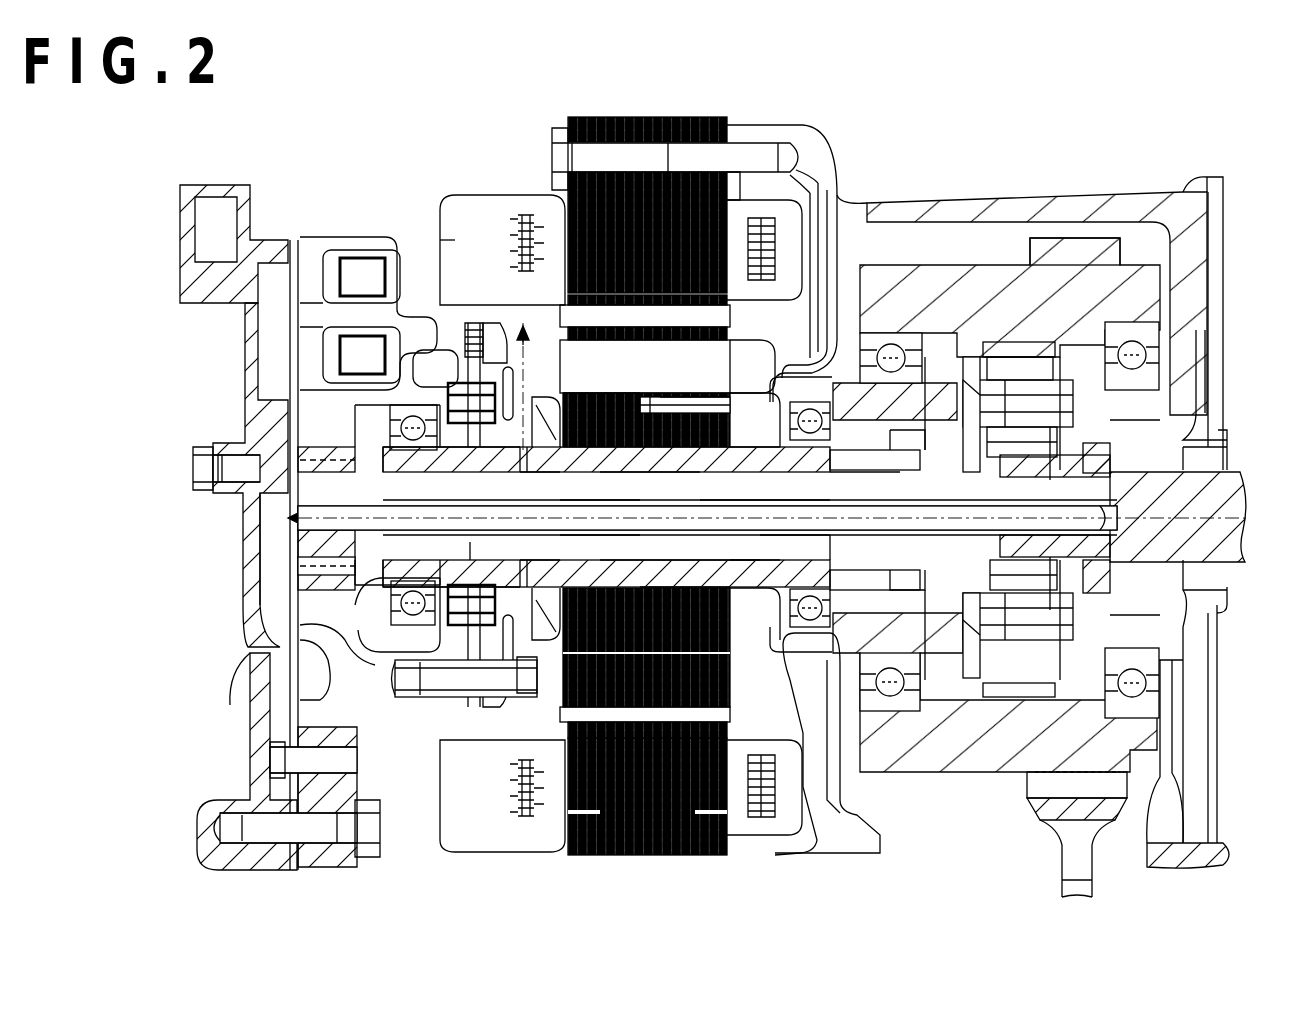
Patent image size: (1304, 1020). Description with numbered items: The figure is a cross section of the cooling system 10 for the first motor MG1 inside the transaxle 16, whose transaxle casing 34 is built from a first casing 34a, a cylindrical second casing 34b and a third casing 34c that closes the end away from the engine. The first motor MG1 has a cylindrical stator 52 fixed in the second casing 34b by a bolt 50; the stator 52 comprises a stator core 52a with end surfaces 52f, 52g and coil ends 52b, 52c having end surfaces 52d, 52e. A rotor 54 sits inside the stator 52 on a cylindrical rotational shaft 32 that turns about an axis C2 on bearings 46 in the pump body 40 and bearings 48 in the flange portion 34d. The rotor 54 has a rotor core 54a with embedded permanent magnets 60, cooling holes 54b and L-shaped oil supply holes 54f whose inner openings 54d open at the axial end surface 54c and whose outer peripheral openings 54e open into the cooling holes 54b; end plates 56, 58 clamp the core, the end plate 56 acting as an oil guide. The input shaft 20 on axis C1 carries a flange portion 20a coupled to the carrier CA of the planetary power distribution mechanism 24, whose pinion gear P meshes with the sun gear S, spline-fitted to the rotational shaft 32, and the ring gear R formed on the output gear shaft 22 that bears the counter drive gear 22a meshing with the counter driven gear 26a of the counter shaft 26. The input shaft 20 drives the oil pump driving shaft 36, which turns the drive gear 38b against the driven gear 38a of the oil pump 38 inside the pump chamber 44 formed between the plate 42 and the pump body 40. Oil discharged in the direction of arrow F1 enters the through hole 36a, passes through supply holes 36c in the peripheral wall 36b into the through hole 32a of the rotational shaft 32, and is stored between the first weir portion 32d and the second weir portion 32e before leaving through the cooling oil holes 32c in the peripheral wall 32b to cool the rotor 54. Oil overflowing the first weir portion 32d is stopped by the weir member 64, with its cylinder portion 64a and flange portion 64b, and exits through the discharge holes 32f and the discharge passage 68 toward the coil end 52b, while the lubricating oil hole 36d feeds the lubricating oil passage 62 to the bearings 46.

The cooling system 10 is at (275, 428).
The transaxle 16 is at (803, 112).
The input shaft 20 is at (1252, 493).
The flange portion 20a is at (1090, 462).
The output gear shaft 22 is at (972, 252).
The counter drive gear 22a is at (1105, 250).
The power distribution mechanism 24 is at (1100, 415).
The counter shaft 26 is at (1052, 848).
The counter driven gear 26a is at (1040, 815).
The rotational shaft 32 is at (707, 481).
The through hole 32a is at (700, 600).
The peripheral wall 32b is at (730, 472).
The cooling oil holes 32c is at (880, 445).
The first weir portion 32d is at (600, 519).
The second weir portion 32e is at (830, 455).
The discharge holes 32f is at (527, 460).
The transaxle casing 34 is at (1118, 190).
The first casing 34a is at (1200, 178).
The second casing 34b is at (766, 128).
The third casing 34c is at (235, 300).
The flange portion 34d is at (830, 240).
The oil pump driving shaft 36 is at (805, 548).
The through hole 36a is at (535, 549).
The peripheral wall 36b is at (717, 549).
The supply holes 36c is at (650, 518).
The lubricating oil hole 36d is at (535, 488).
The oil pump 38 is at (282, 430).
The driven gear 38a is at (245, 453).
The drive gear 38b is at (283, 553).
The pump body 40 is at (393, 246).
The plate 42 is at (300, 700).
The pump chamber 44 is at (335, 592).
The bearings 46 is at (390, 418).
The bearings 48 is at (980, 412).
The bolt 50 is at (560, 128).
The stator 52 is at (482, 192).
The stator core 52a is at (655, 116).
The coil end 52b is at (500, 205).
The coil end 52c is at (787, 217).
The end surface 52d is at (440, 247).
The end surface 52e is at (805, 320).
The end surface 52f is at (588, 165).
The end surface 52g is at (742, 212).
The rotor 54 is at (508, 333).
The rotor core 54a is at (556, 358).
The cooling holes 54b is at (740, 362).
The axial end surface 54c is at (745, 387).
The inner opening 54d is at (805, 513).
The outer peripheral opening 54e is at (636, 395).
The oil supply holes 54f is at (648, 412).
The end plate 56 is at (733, 412).
The end plate 58 is at (548, 400).
The permanent magnets 60 is at (600, 308).
The lubricating oil passage 62 is at (433, 517).
The weir member 64 is at (455, 478).
The cylinder portion 64a is at (465, 699).
The flange portion 64b is at (495, 549).
The discharge passage 68 is at (490, 360).
The first motor MG1 is at (478, 166).
The axis C1 is at (1240, 519).
The axis C2 is at (847, 508).
The arrow F1 is at (298, 515).
The ring gear R is at (995, 342).
The pinion gear P is at (990, 395).
The sun gear S is at (990, 452).
The carrier CA is at (1040, 360).